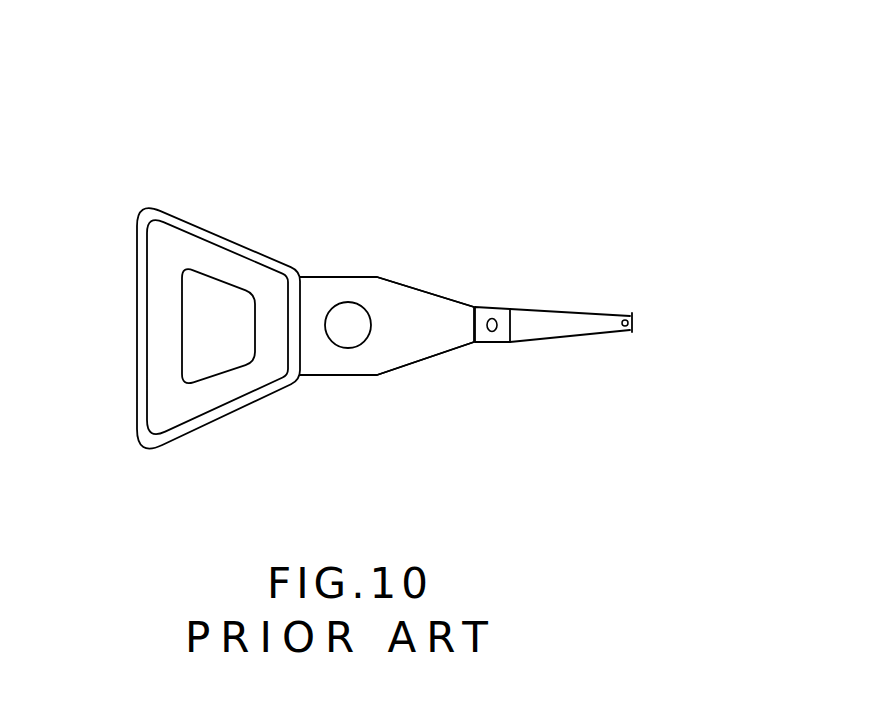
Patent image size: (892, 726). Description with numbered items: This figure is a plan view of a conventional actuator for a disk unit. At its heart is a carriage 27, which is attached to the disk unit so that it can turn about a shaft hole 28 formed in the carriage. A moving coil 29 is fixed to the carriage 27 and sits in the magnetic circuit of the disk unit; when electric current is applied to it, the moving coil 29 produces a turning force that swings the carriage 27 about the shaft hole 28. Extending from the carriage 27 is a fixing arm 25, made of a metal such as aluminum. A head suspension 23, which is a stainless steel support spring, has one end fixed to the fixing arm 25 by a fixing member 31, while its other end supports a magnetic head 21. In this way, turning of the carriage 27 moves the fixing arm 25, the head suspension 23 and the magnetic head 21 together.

The magnetic head 21 is at (630, 317).
The head suspension 23 is at (552, 310).
The fixing arm 25 is at (413, 300).
The carriage 27 is at (332, 283).
The shaft hole 28 is at (350, 332).
The moving coil 29 is at (202, 260).
The fixing member 31 is at (492, 331).